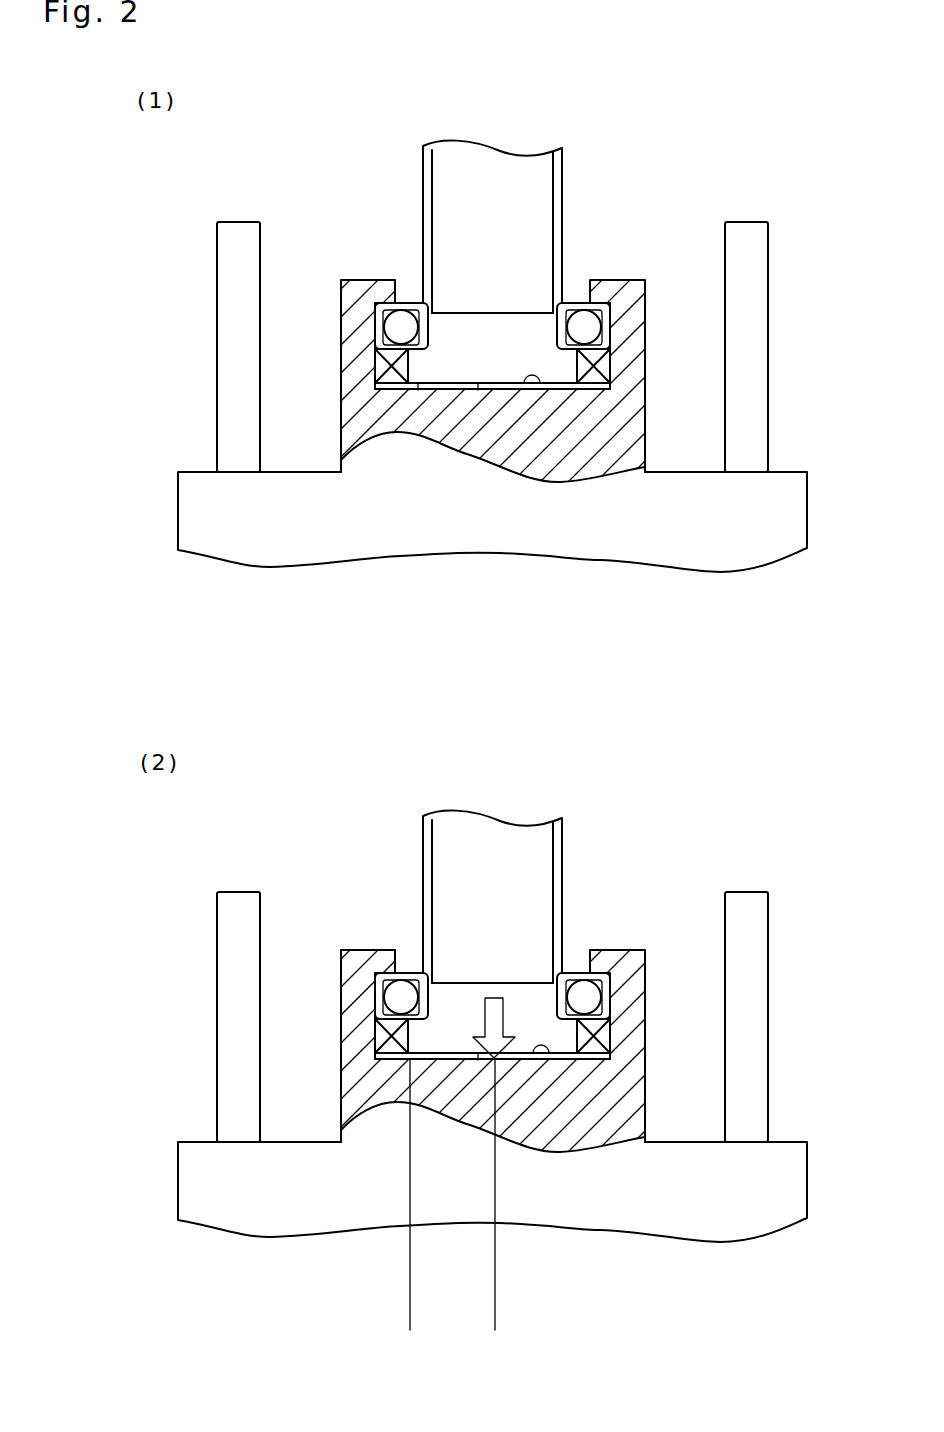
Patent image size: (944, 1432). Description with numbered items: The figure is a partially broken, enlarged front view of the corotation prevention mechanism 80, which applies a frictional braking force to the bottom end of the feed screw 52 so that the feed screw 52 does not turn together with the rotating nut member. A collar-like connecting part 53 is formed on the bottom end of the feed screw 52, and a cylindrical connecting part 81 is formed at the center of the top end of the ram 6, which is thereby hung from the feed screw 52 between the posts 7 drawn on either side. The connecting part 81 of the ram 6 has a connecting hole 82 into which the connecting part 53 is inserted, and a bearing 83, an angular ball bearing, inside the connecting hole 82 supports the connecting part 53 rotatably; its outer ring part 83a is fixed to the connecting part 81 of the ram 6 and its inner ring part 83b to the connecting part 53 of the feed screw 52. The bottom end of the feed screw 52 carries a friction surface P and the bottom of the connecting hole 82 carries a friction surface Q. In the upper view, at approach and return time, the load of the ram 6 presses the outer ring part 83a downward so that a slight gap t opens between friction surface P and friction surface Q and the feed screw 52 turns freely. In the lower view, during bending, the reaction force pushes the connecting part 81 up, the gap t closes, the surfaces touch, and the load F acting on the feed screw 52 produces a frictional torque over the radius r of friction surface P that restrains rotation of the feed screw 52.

The feed screw 52 is at (558, 162).
The connecting part 53 is at (487, 332).
The support post 7 is at (224, 251).
The ram 6 is at (797, 507).
The corotation prevention mechanism 80 is at (638, 258).
The connecting part 81 is at (638, 417).
The connecting hole 82 is at (604, 365).
The bearing 83 is at (326, 678).
The outer ring part 83a is at (376, 321).
The inner ring part 83b is at (376, 375).
The gap t is at (418, 390).
The friction surface P is at (478, 390).
The friction surface Q is at (543, 389).
The load F is at (494, 1011).
The radius r is at (410, 1318).